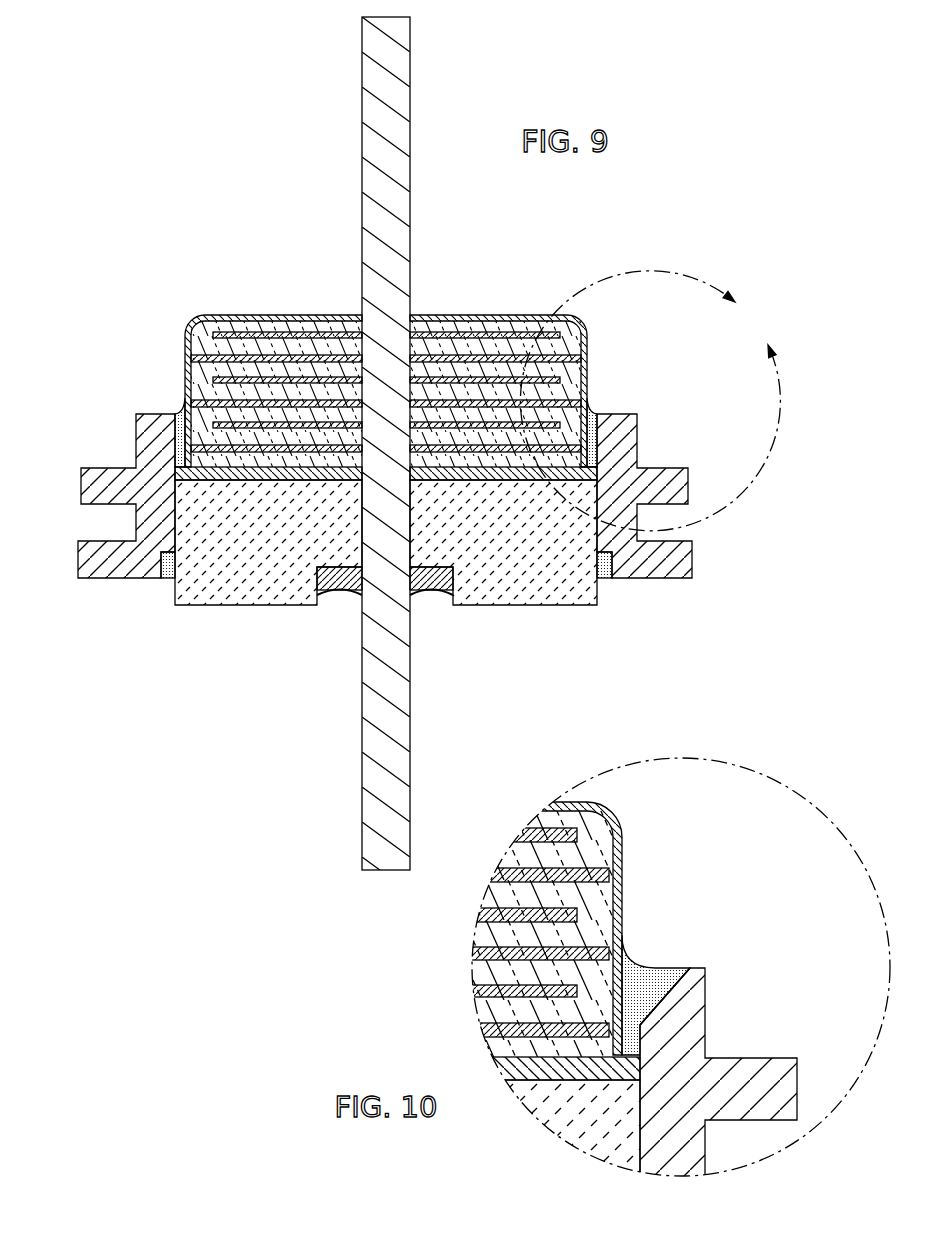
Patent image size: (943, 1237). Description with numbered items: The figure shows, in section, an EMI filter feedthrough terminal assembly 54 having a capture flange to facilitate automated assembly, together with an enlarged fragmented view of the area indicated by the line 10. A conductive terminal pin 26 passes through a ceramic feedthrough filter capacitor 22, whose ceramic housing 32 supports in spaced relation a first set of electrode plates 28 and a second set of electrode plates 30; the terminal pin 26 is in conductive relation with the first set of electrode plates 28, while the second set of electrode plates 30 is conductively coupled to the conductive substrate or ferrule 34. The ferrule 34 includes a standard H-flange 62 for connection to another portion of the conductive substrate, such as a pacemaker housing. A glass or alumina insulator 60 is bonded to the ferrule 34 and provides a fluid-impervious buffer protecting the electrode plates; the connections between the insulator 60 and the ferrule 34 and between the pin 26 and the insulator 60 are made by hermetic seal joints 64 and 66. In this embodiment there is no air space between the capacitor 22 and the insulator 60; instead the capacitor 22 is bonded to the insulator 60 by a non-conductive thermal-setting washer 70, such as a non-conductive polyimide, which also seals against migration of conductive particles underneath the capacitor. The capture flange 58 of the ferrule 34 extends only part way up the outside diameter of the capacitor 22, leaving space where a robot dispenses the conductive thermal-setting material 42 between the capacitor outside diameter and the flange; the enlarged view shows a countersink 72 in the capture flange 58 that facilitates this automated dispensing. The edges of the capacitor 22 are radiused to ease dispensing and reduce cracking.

In FIG. 9, the line indicating enlarged area 10 is at (650, 401).
In FIG. 9, the ceramic feedthrough filter capacitor 22 is at (351, 363).
In FIG. 10, the ceramic feedthrough filter capacitor 22 is at (579, 895).
In FIG. 9, the conductive terminal pin 26 is at (380, 88).
In FIG. 9, the first set of electrode plates 28 is at (278, 325).
In FIG. 10, the first set of electrode plates 28 is at (566, 803).
In FIG. 9, the second set of electrode plates 30 is at (188, 343).
In FIG. 10, the second set of electrode plates 30 is at (616, 858).
In FIG. 10, the ceramic housing 32 is at (600, 914).
In FIG. 9, the conductive substrate or ferrule 34 is at (692, 560).
In FIG. 10, the conductive substrate or ferrule 34 is at (766, 1058).
In FIG. 9, the conductive thermal-setting material 42 is at (594, 414).
In FIG. 10, the conductive thermal-setting material 42 is at (650, 975).
In FIG. 9, the EMI filter feedthrough terminal assembly 54 is at (389, 534).
In FIG. 10, the EMI filter feedthrough terminal assembly 54 is at (642, 1032).
In FIG. 9, the capture flange 58 is at (637, 430).
In FIG. 10, the capture flange 58 is at (696, 1009).
In FIG. 9, the insulator 60 is at (263, 583).
In FIG. 10, the insulator 60 is at (603, 1137).
In FIG. 9, the H-flange 62 is at (100, 540).
In FIG. 9, the hermetic seal joint 64 is at (333, 596).
In FIG. 9, the hermetic seal joint 66 is at (165, 580).
In FIG. 9, the non-conductive thermal-setting washer 70 is at (200, 481).
In FIG. 10, the non-conductive thermal-setting washer 70 is at (533, 1068).
In FIG. 10, the countersink 72 is at (674, 984).